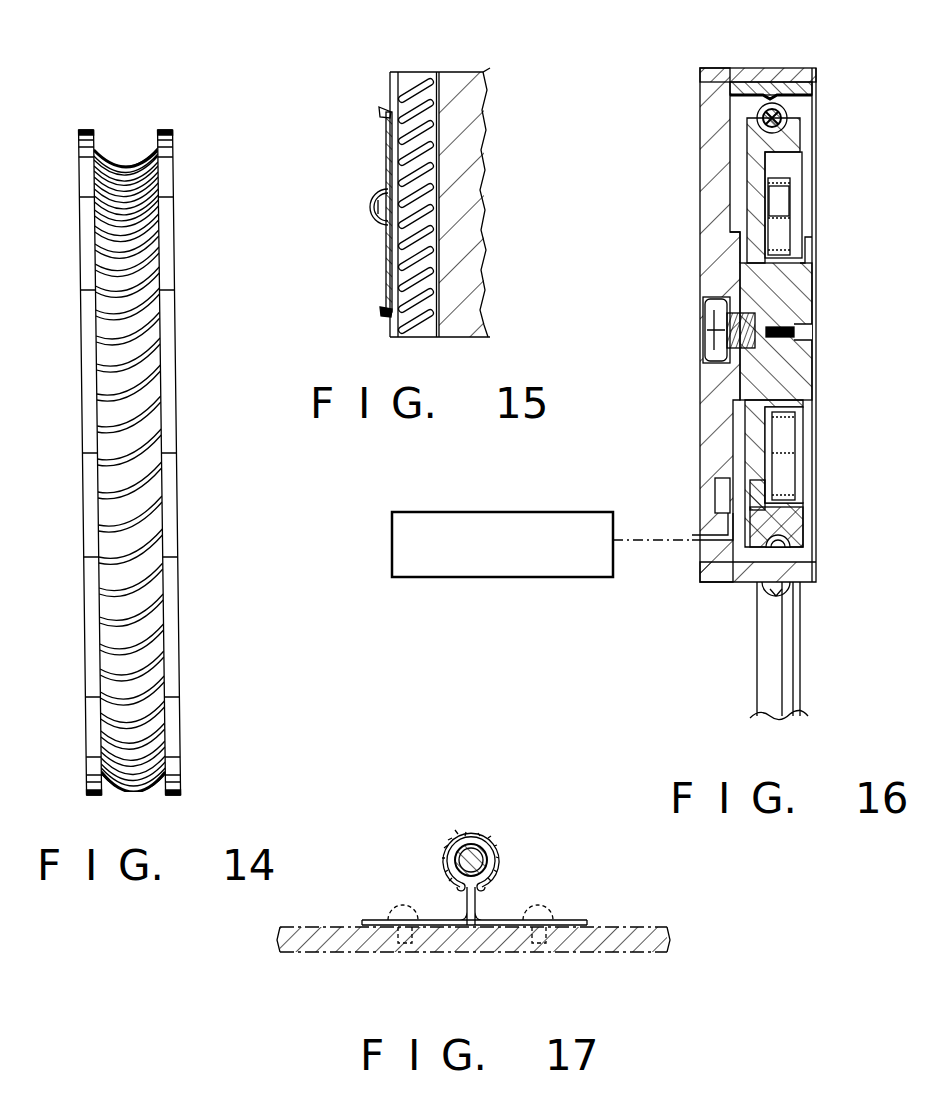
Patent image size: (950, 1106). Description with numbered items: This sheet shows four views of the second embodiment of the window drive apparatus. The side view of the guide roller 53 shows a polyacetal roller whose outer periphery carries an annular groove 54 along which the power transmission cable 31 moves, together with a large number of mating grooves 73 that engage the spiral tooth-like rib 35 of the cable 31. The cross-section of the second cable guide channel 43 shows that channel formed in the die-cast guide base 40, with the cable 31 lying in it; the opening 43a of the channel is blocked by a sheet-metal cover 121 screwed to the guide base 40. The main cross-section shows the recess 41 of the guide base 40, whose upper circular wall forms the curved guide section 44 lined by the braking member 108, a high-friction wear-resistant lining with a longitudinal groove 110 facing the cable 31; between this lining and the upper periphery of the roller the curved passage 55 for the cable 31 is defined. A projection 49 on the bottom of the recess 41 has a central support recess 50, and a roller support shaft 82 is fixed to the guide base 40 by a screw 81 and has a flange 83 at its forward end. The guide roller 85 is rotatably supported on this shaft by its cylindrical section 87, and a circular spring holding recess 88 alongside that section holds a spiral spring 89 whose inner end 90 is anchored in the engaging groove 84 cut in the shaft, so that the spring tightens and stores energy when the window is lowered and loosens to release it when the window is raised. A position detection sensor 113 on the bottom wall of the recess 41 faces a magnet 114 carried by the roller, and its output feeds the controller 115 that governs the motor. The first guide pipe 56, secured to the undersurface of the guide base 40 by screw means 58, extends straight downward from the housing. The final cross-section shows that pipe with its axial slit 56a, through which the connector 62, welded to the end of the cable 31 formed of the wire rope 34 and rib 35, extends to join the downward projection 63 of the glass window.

In FIG. 15, the power transmission cable 31 is at (386, 312).
In FIG. 16, the power transmission cable 31 is at (786, 114).
In FIG. 17, the power transmission cable 31 is at (493, 872).
In FIG. 17, the wire rope 34 is at (492, 853).
In FIG. 17, the tooth-like rib 35 is at (483, 835).
In FIG. 15, the guide base 40 is at (458, 247).
In FIG. 16, the guide base 40 is at (705, 512).
In FIG. 16, the recess 41 is at (738, 207).
In FIG. 15, the second cable guide groove 43 is at (428, 162).
In FIG. 15, the opening of the second cable guide groove 43a is at (386, 107).
In FIG. 16, the curved guide section 44 is at (803, 72).
In FIG. 16, the projection 49 is at (742, 240).
In FIG. 16, the support recess 50 is at (720, 292).
In FIG. 14, the guide roller 53 is at (175, 313).
In FIG. 14, the annular groove 54 is at (117, 143).
In FIG. 16, the annular groove 54 is at (787, 533).
In FIG. 16, the curved passage 55 is at (753, 102).
In FIG. 16, the first guide pipe 56 is at (760, 653).
In FIG. 17, the first guide pipe 56 is at (458, 833).
In FIG. 17, the slit 56a is at (460, 887).
In FIG. 16, the screw means 58 is at (793, 602).
In FIG. 17, the connector 62 is at (505, 928).
In FIG. 17, the downward projection 63 is at (625, 937).
In FIG. 14, the mating grooves 73 is at (103, 260).
In FIG. 16, the mating grooves 73 is at (785, 513).
In FIG. 16, the screw 81 is at (708, 323).
In FIG. 16, the roller support shaft 82 is at (748, 375).
In FIG. 16, the flange 83 is at (810, 415).
In FIG. 16, the groove 84 is at (807, 331).
In FIG. 16, the guide roller 85 is at (753, 167).
In FIG. 16, the cylindrical section 87 is at (797, 267).
In FIG. 16, the spring holding recess 88 is at (780, 163).
In FIG. 16, the spiral spring 89 is at (780, 460).
In FIG. 16, the inner end of the spiral spring 90 is at (787, 340).
In FIG. 16, the braking member 108 is at (728, 88).
In FIG. 16, the groove 110 is at (768, 92).
In FIG. 16, the position detection sensor 113 is at (722, 495).
In FIG. 16, the magnet 114 is at (760, 480).
In FIG. 16, the controller 115 is at (535, 577).
In FIG. 15, the cover 121 is at (388, 267).